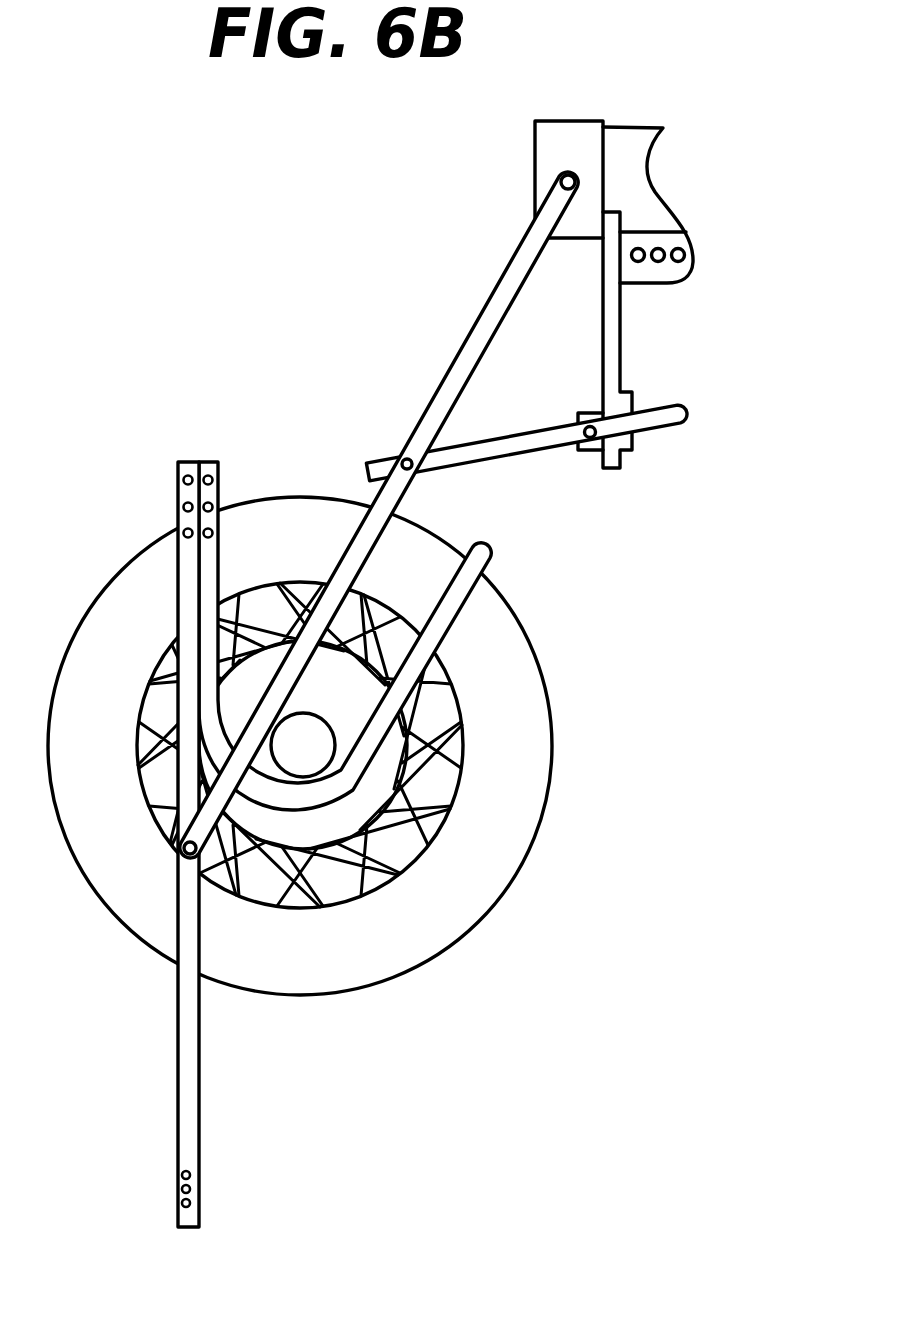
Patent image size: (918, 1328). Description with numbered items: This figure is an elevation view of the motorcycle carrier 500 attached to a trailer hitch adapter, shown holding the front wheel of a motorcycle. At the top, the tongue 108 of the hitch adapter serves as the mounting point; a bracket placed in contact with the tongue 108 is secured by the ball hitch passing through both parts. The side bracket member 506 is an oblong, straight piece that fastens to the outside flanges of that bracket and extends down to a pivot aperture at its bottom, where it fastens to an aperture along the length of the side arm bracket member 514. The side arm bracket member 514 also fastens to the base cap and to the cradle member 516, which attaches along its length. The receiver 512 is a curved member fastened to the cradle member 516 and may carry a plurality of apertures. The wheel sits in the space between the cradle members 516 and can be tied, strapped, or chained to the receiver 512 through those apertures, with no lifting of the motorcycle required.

The motorcycle carrier 500 is at (401, 806).
The tongue 108 is at (611, 343).
The side bracket member 506 is at (527, 448).
The receiver 512 is at (312, 795).
The side arm bracket member 514 is at (452, 384).
The cradle member 516 is at (187, 1073).